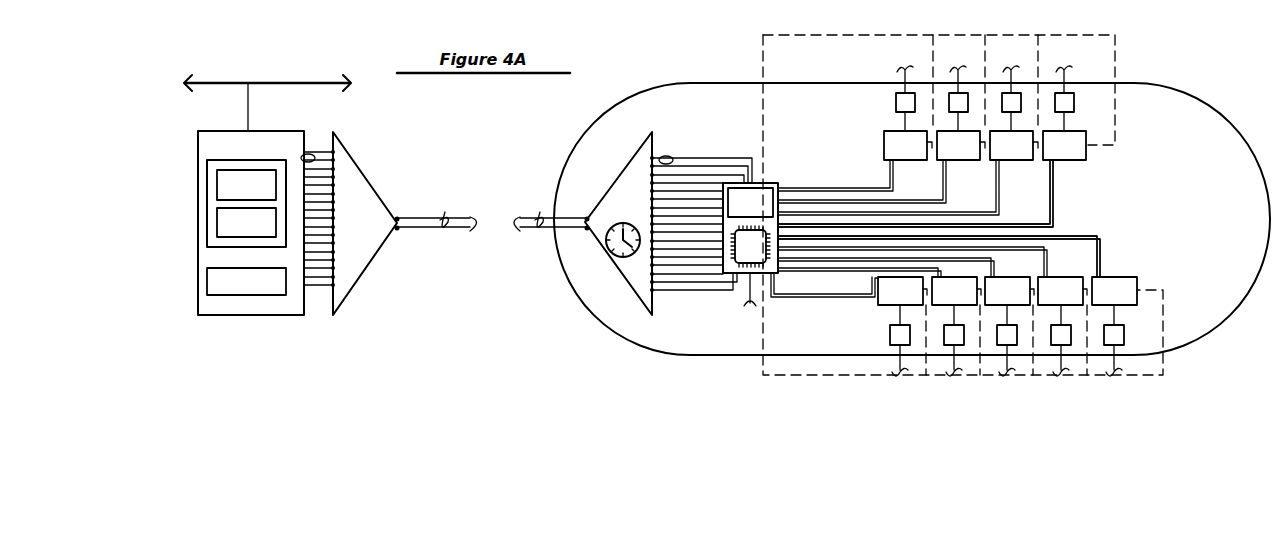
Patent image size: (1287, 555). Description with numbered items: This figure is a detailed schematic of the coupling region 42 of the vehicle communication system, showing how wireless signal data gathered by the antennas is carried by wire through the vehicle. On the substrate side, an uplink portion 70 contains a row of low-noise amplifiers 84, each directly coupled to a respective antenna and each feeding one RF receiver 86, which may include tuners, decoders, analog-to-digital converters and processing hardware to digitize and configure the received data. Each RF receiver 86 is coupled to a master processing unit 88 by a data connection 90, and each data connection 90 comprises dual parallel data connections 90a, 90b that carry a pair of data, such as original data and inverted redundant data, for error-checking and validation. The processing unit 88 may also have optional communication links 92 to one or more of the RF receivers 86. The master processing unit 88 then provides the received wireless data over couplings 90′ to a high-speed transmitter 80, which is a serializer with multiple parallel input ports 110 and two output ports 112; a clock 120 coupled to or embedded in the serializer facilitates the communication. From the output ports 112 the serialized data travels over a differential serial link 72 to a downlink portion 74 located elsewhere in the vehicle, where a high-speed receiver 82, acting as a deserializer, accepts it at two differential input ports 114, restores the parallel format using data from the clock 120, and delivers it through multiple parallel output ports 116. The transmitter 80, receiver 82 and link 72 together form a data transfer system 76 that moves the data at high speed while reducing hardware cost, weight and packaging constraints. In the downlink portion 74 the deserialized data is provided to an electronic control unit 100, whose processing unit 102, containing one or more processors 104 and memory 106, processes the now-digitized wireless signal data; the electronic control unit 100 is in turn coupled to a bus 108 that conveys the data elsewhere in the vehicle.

The coupling region 42 is at (648, 80).
The uplink portion 70 is at (553, 128).
The differential serial link 72 is at (533, 238).
The downlink portion 74 is at (389, 150).
The data transfer system 76 is at (480, 318).
The high-speed transmitter 80 is at (641, 196).
The high-speed receiver 82 is at (364, 198).
The low-noise amplifier 84 is at (1060, 92).
The RF receiver 86 is at (238, 291).
The master processing unit 88 is at (777, 179).
The data connection 90 is at (1010, 194).
The first parallel data connection 90a is at (1048, 223).
The second parallel data connection 90b is at (1056, 211).
The couplings to transmitter 90′ is at (670, 157).
The communication link 92 is at (1115, 35).
The electronic control unit 100 is at (258, 131).
The processing unit 102 is at (215, 160).
The processor 104 is at (234, 194).
The memory 106 is at (234, 231).
The bus 108 is at (258, 83).
The parallel input ports 110 is at (650, 292).
The output ports 112 is at (585, 218).
The differential input ports 114 is at (400, 217).
The parallel output ports 116 is at (340, 292).
The clock 120 is at (608, 249).